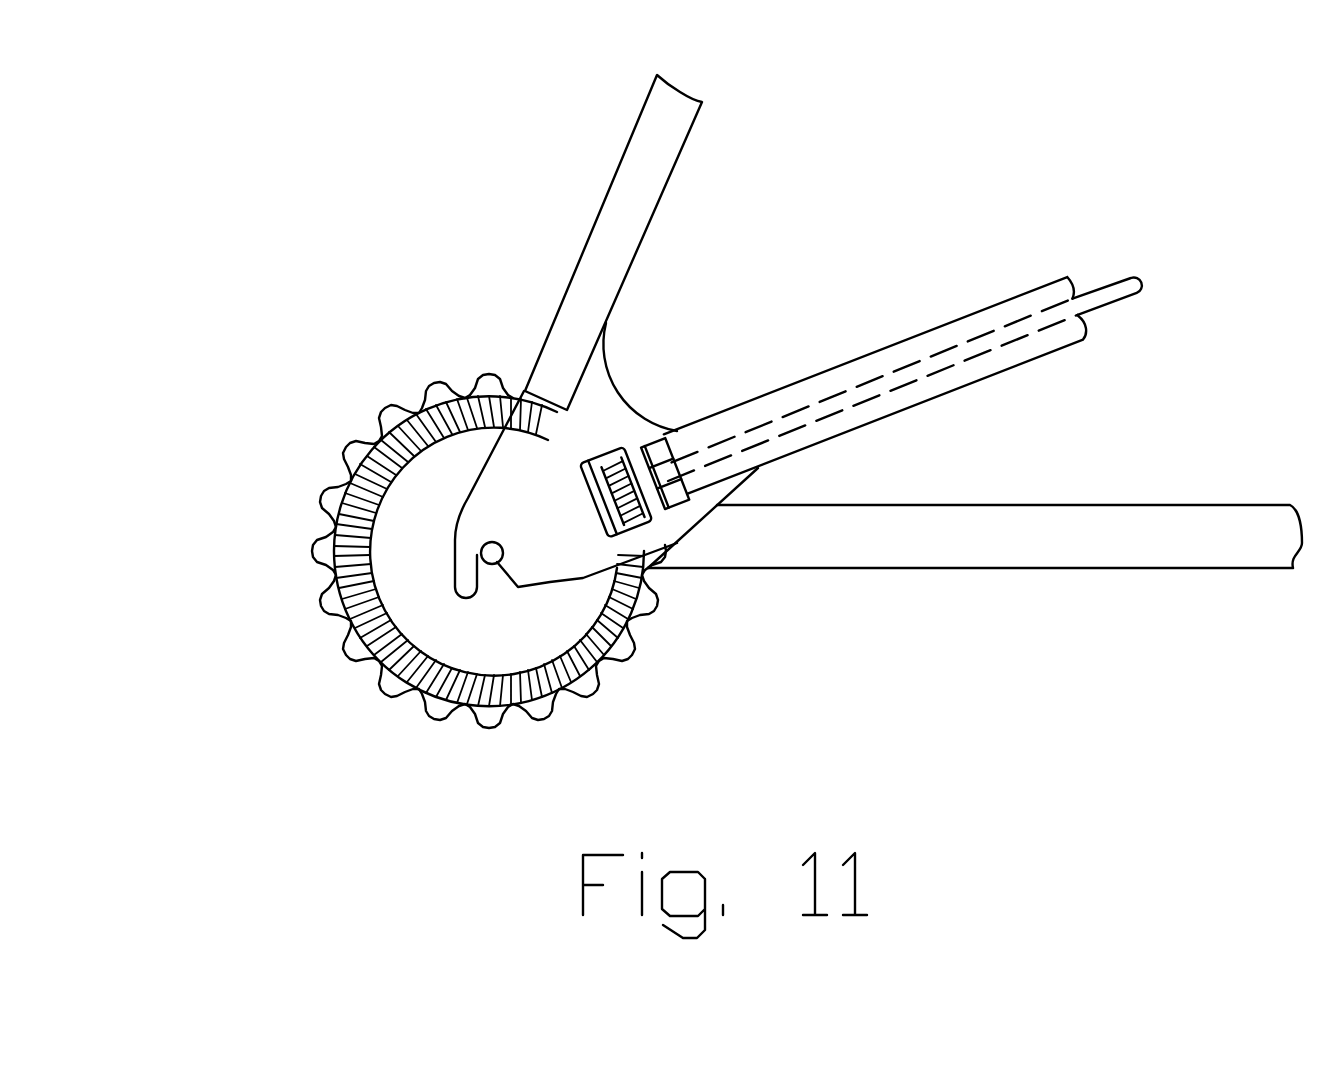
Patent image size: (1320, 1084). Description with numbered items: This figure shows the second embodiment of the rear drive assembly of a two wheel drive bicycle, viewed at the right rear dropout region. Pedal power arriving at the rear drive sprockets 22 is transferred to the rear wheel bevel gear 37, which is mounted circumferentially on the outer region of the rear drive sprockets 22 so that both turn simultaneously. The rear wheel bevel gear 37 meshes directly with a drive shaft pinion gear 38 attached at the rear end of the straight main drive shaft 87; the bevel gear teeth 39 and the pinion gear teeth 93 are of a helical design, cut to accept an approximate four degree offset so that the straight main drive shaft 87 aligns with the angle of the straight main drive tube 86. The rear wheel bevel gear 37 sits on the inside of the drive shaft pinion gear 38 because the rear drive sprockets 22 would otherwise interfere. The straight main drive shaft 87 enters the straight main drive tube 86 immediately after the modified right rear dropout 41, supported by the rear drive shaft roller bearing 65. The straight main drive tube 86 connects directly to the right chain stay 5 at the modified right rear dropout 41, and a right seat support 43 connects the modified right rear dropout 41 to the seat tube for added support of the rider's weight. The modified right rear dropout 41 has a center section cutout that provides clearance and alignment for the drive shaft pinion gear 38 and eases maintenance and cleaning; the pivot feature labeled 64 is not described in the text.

The right chain stay 5 is at (848, 568).
The rear drive sprockets 22 is at (350, 653).
The rear wheel bevel gear 37 is at (417, 520).
The drive shaft pinion gear 38 is at (633, 510).
The bevel gear teeth 39 is at (340, 568).
The modified right rear dropout 41 is at (514, 439).
The right seat support 43 is at (663, 195).
The pivot pin 64 is at (493, 563).
The rear drive shaft roller bearing 65 is at (668, 443).
The straight main drive tube 86 is at (1050, 357).
The straight main drive shaft 87 is at (1105, 287).
The pinion gear teeth 93 is at (620, 500).